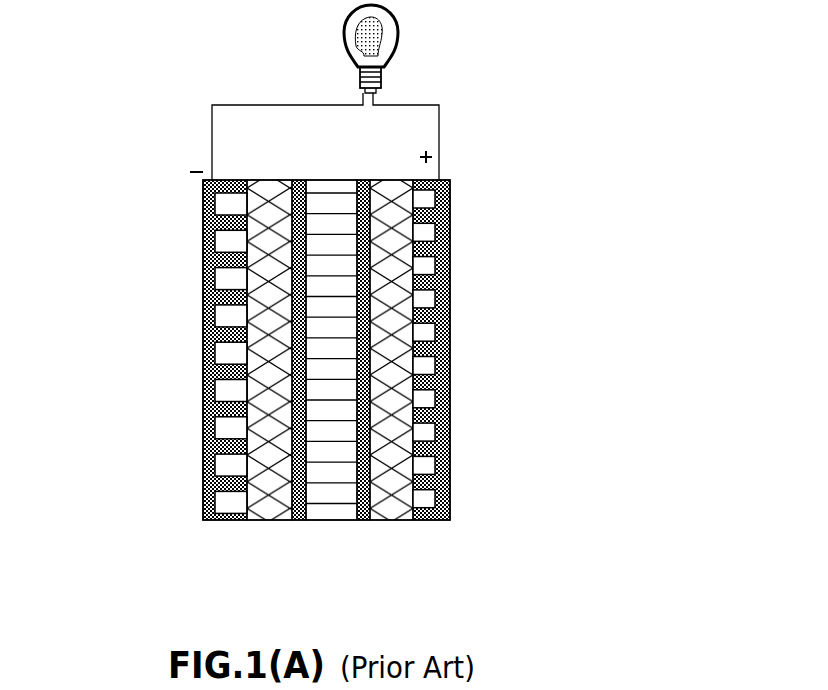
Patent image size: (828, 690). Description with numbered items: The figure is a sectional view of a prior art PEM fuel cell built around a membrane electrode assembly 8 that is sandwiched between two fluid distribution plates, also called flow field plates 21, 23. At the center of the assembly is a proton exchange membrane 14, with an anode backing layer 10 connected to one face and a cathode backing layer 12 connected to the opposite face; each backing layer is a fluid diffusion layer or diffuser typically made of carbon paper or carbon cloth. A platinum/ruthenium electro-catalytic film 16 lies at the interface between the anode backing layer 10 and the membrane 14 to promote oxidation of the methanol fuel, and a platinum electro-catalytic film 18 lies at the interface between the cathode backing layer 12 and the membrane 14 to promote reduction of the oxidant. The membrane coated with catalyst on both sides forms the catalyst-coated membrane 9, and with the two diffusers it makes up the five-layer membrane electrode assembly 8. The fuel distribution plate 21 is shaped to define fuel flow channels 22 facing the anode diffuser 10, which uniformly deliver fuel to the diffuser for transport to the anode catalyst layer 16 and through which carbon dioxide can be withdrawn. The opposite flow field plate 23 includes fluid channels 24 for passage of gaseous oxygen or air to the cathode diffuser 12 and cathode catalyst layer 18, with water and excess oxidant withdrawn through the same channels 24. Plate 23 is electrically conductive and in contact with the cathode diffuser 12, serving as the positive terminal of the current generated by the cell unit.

The membrane electrode assembly 8 is at (335, 374).
The catalyst-coated membrane 9 is at (333, 356).
The anode backing layer 10 is at (265, 523).
The cathode backing layer 12 is at (390, 523).
The proton exchange membrane 14 is at (332, 503).
The platinum/ruthenium electro-catalytic film 16 is at (298, 523).
The platinum electro-catalytic film 18 is at (362, 523).
The fuel distribution plate 21 is at (199, 350).
The fuel flow channels 22 is at (240, 315).
The flow field plate 23 is at (466, 350).
The fluid channels 24 is at (423, 334).